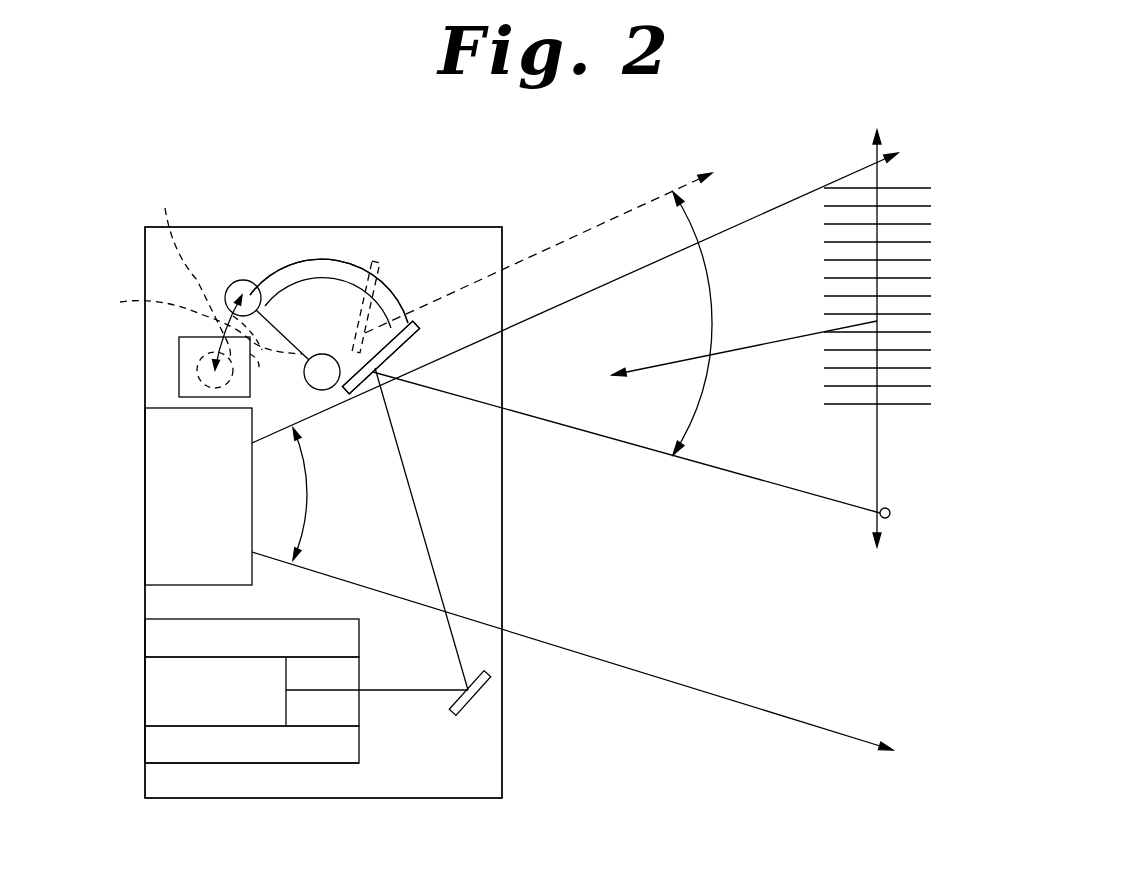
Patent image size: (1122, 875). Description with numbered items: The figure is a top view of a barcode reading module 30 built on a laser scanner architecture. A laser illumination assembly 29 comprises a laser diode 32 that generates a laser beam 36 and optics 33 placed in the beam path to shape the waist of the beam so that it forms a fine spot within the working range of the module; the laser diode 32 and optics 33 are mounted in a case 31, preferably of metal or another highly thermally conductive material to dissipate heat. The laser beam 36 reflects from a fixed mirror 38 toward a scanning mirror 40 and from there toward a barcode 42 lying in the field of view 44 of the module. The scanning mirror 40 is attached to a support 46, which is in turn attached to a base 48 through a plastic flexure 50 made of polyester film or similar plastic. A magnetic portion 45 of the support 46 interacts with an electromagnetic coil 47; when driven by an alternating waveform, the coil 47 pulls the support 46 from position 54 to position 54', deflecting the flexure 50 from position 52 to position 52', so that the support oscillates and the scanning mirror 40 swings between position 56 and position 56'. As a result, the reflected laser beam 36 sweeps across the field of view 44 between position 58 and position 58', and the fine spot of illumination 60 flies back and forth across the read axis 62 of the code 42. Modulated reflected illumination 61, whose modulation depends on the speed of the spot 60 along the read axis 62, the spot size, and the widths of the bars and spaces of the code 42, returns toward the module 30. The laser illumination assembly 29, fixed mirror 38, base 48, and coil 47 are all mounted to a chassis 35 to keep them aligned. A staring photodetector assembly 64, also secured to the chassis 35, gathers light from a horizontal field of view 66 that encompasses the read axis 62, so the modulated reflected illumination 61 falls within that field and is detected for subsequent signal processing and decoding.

The laser illumination assembly 29 is at (193, 764).
The barcode reading module 30 is at (475, 187).
The case 31 is at (165, 639).
The laser diode 32 is at (237, 727).
The optics 33 is at (320, 726).
The chassis 35 is at (440, 798).
The laser beam 36 is at (440, 688).
The fixed mirror 38 is at (477, 688).
The scanning mirror 40 is at (412, 337).
The barcode 42 is at (907, 188).
The field of view 44 is at (700, 402).
The magnetic portion 45 is at (236, 283).
The support 46 is at (330, 277).
The electromagnetic coil 47 is at (179, 368).
The base 48 is at (322, 354).
The plastic flexure 50 is at (293, 322).
The position of flexure 52 is at (281, 244).
The deflected position of flexure 52' is at (189, 271).
The position of support 54 is at (329, 224).
The second position of support 54' is at (196, 331).
The position of scanning mirror 56 is at (441, 336).
The second position of scanning mirror 56' is at (396, 264).
The position of laser beam 58 is at (575, 335).
The second position of laser beam 58' is at (538, 240).
The spot of illumination 60 is at (890, 513).
The modulated reflected illumination 61 is at (747, 347).
The read axis 62 is at (878, 448).
The staring photodetector assembly 64 is at (145, 483).
The horizontal field of view 66 is at (307, 517).